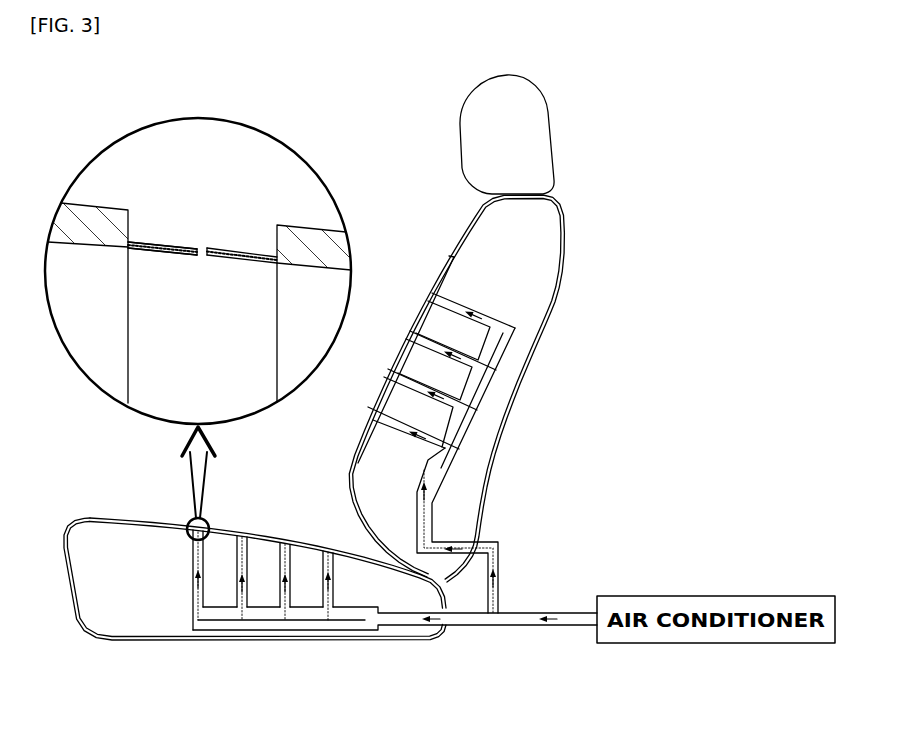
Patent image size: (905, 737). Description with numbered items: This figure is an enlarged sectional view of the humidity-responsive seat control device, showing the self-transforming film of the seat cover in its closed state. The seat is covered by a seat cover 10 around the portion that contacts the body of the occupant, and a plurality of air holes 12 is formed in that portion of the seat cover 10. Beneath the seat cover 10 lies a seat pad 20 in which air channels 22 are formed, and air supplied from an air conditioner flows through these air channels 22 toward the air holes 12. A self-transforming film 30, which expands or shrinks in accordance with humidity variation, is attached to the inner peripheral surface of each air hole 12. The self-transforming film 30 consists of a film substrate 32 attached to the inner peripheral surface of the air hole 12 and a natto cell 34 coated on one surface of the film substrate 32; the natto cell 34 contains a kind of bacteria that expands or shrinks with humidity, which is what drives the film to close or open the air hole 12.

The seat cover 10 is at (293, 236).
The air hole 12 is at (204, 246).
The seat pad 20 is at (132, 592).
The air channel 22 is at (197, 557).
The self-transforming film 30 is at (150, 241).
The film substrate 32 is at (172, 243).
The natto cell 34 is at (157, 256).